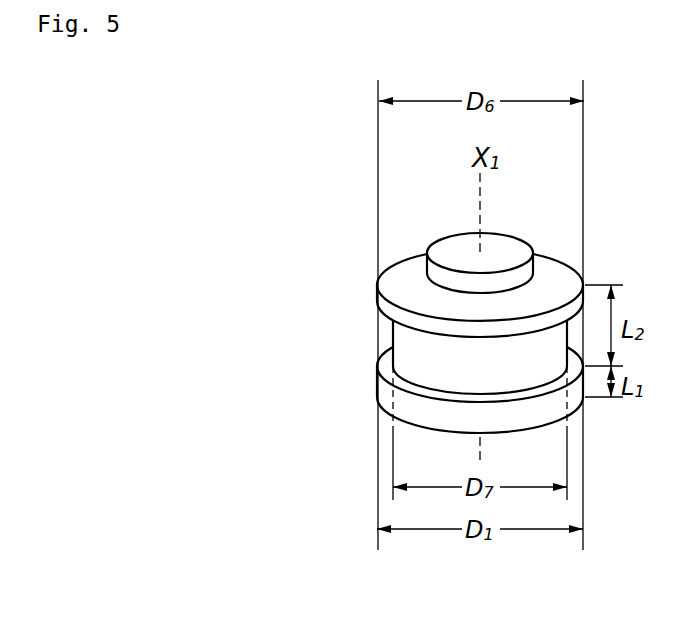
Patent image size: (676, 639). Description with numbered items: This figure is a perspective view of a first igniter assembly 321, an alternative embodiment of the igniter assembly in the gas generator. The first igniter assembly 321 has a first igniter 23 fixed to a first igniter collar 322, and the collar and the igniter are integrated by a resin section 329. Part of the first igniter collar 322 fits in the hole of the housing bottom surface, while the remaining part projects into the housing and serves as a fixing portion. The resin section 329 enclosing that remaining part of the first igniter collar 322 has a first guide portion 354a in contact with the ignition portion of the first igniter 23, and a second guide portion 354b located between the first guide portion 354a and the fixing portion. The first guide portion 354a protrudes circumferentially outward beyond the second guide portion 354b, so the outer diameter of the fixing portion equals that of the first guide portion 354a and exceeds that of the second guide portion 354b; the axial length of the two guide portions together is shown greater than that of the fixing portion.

The first igniter assembly 321 is at (349, 278).
The resin section 329 is at (252, 296).
The first guide portion 354a is at (388, 310).
The second guide portion 354b is at (407, 346).
The first igniter collar 322 is at (379, 386).
The first igniter 23 is at (450, 248).